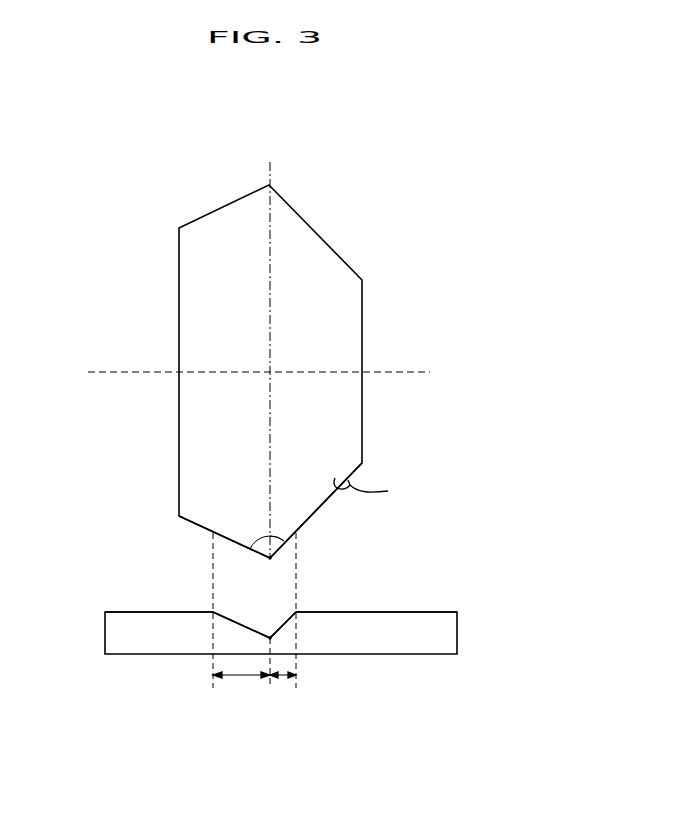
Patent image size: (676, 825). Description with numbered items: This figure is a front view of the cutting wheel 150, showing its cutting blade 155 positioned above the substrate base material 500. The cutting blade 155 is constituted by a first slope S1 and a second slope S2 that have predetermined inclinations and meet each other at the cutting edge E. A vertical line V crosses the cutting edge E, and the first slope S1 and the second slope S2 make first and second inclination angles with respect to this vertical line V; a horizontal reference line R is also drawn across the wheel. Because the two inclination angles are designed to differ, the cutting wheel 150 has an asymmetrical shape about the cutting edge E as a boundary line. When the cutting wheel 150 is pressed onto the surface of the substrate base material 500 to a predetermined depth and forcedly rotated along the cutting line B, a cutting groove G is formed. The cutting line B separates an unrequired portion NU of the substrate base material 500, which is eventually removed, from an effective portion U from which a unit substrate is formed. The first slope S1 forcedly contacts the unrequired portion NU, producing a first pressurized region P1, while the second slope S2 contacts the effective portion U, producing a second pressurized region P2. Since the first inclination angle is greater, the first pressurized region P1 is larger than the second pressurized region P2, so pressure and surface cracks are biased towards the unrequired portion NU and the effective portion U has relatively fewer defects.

The cutting wheel 150 is at (322, 253).
The cutting blade 155 is at (376, 489).
The substrate base material 500 is at (470, 617).
The vertical line V is at (268, 349).
The reference line R is at (268, 373).
The first slope S1 is at (198, 523).
The second slope S2 is at (318, 510).
The cutting edge E is at (276, 560).
The cutting groove G is at (273, 622).
The cutting line B is at (271, 646).
The effective portion U is at (455, 638).
The unrequired portion NU is at (110, 638).
The first pressurized region P1 is at (241, 622).
The second pressurized region P2 is at (283, 622).